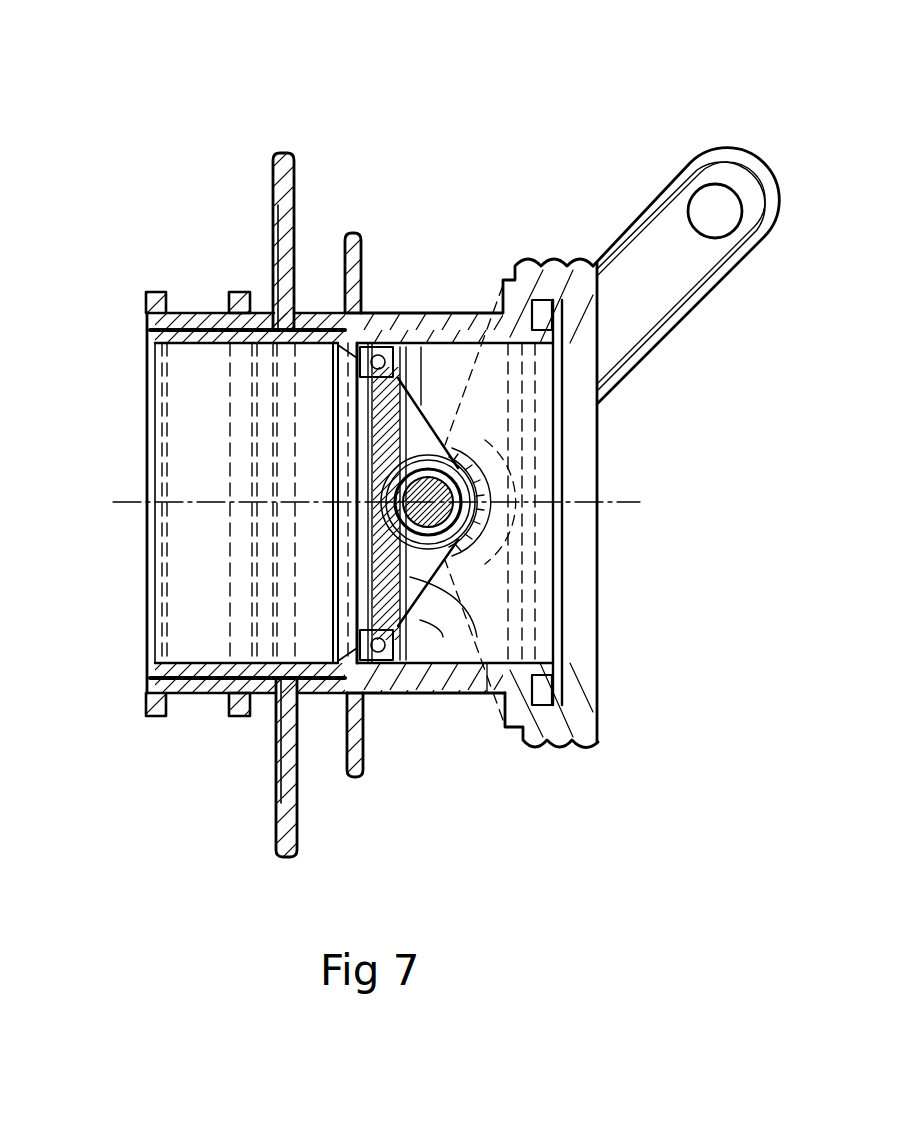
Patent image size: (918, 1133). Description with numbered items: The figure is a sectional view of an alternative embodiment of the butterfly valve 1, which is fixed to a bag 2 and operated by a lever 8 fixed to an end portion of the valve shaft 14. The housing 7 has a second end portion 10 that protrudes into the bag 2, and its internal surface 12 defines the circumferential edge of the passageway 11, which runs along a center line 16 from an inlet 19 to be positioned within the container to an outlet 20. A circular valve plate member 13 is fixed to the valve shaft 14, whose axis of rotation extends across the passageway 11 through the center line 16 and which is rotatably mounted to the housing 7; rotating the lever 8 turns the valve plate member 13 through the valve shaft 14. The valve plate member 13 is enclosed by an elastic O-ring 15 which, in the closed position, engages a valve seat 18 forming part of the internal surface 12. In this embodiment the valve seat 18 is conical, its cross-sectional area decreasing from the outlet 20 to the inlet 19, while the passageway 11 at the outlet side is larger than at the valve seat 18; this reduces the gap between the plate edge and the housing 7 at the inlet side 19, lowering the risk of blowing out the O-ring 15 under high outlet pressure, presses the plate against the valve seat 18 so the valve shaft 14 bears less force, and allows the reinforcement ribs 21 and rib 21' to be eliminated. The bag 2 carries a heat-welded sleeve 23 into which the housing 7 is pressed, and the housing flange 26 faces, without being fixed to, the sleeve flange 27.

The butterfly valve 1 is at (403, 80).
The bag 2 is at (273, 202).
The housing 7 is at (455, 305).
The lever 8 is at (757, 247).
The second end portion 10 is at (190, 663).
The passageway 11 is at (185, 414).
The internal surface 12 is at (185, 352).
The valve plate member 13 is at (453, 697).
The valve shaft 14 is at (448, 555).
The O-ring 15 is at (400, 695).
The center line 16 is at (124, 496).
The valve seat 18 is at (378, 305).
The inlet 19 is at (180, 595).
The outlet 20 is at (587, 527).
The reinforcement ribs 21 is at (569, 427).
The ring gear rim 21' is at (538, 744).
The sleeve 23 is at (198, 695).
The flange 26 is at (296, 810).
The flange 27 is at (276, 762).